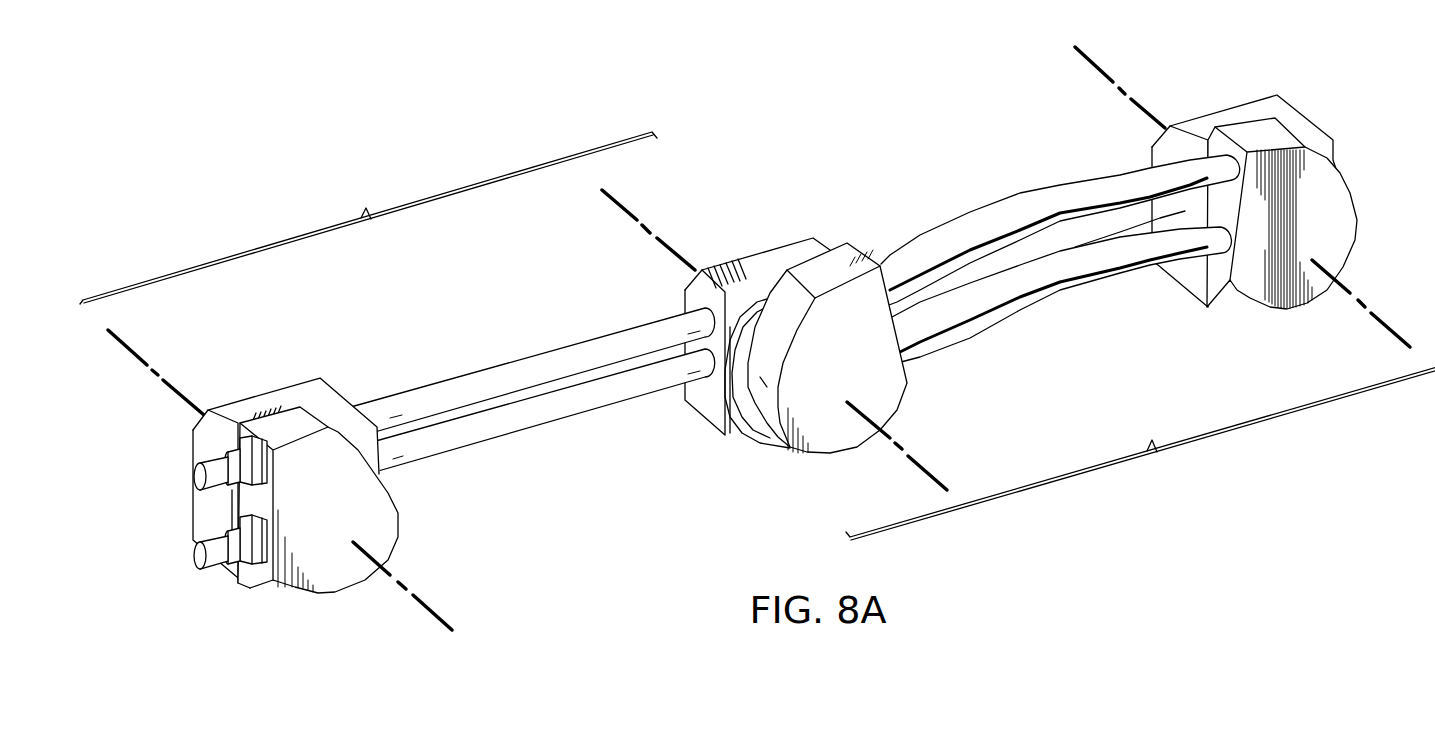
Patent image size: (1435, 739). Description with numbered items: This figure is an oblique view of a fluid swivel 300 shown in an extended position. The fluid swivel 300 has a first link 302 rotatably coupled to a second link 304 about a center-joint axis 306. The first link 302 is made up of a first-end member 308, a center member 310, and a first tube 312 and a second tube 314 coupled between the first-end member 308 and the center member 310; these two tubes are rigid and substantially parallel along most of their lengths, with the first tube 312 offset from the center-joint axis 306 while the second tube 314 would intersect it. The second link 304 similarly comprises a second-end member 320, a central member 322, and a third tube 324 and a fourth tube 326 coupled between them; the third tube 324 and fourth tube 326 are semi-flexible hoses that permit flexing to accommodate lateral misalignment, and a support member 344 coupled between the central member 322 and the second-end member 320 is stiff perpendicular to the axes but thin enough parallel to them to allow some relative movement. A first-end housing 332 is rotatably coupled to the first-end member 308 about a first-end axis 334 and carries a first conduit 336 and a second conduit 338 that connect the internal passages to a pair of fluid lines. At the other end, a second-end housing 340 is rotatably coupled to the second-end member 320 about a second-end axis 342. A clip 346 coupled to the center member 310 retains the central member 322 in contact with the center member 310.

The fluid swivel 300 is at (454, 98).
The first link 302 is at (368, 218).
The second link 304 is at (1140, 453).
The center-joint axis 306 is at (628, 210).
The first-end member 308 is at (265, 401).
The center member 310 is at (757, 260).
The first tube 312 is at (530, 357).
The second tube 314 is at (540, 427).
The second-end member 320 is at (1347, 224).
The central member 322 is at (827, 443).
The third tube 324 is at (1032, 193).
The fourth tube 326 is at (1137, 273).
The first-end housing 332 is at (337, 580).
The first-end axis 334 is at (137, 352).
The first conduit 336 is at (197, 455).
The second conduit 338 is at (197, 533).
The second-end housing 340 is at (1250, 110).
The second-end axis 342 is at (1086, 63).
The support member 344 is at (1023, 318).
The clip 346 is at (747, 447).